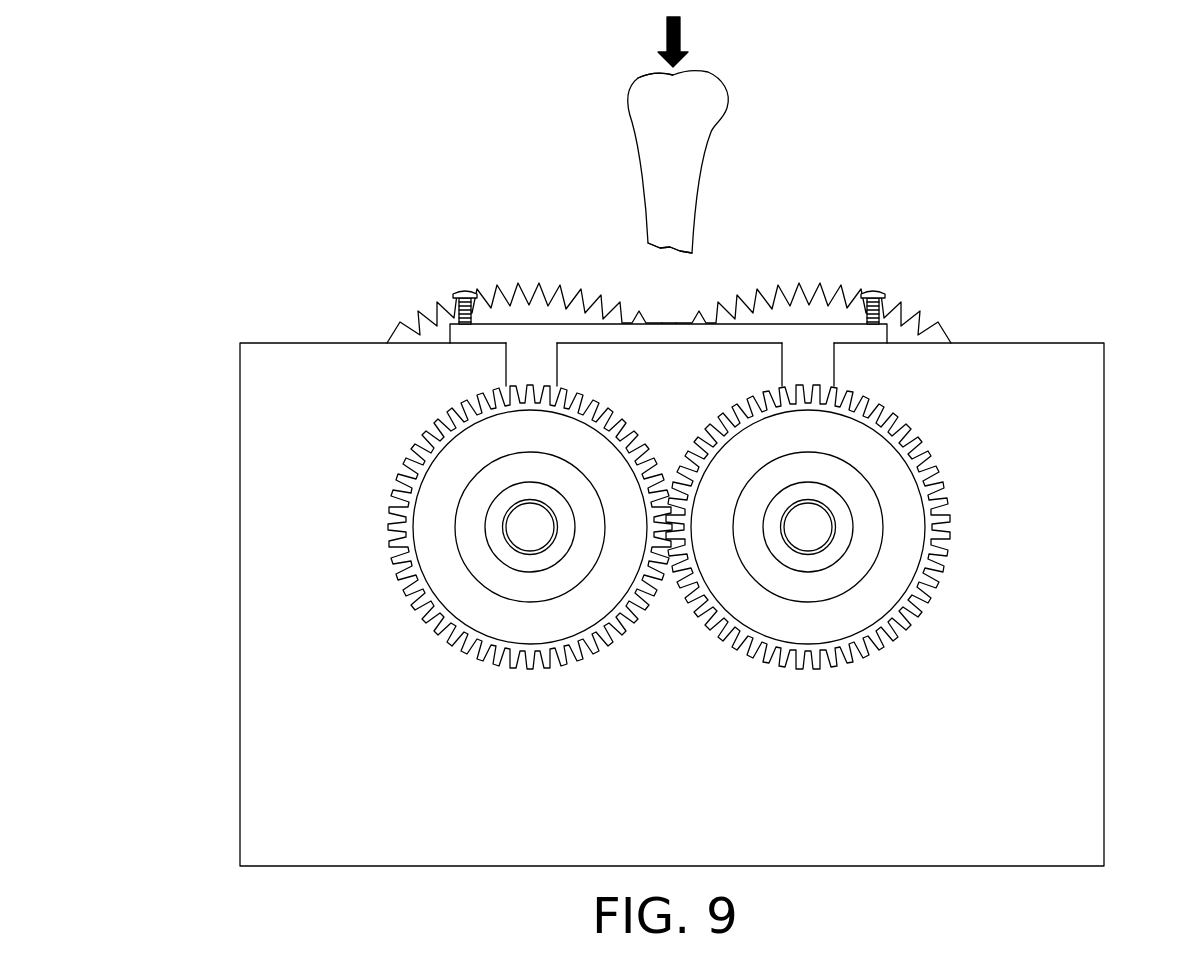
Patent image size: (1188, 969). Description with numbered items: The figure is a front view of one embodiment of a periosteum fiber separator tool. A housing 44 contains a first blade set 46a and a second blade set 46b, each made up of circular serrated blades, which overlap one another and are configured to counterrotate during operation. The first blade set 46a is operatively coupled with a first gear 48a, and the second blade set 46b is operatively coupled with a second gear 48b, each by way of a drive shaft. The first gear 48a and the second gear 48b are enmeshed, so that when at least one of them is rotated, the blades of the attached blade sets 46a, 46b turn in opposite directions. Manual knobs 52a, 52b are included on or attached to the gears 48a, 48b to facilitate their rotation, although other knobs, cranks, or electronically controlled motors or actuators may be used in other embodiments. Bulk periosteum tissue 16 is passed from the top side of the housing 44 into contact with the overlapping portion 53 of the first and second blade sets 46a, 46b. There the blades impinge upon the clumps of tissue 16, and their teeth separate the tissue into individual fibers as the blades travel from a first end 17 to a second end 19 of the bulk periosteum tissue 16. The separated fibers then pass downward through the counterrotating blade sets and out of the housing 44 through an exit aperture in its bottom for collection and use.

The housing 44 is at (1035, 343).
The first blade set 46a is at (975, 285).
The second blade set 46b is at (363, 285).
The overlapping portion 53 is at (640, 301).
The first gear 48a is at (945, 552).
The second gear 48b is at (393, 550).
The manual knob 52a is at (838, 558).
The manual knob 52b is at (498, 558).
The bulk periosteum tissue 16 is at (705, 135).
The second end 19 is at (642, 78).
The first end 17 is at (658, 247).